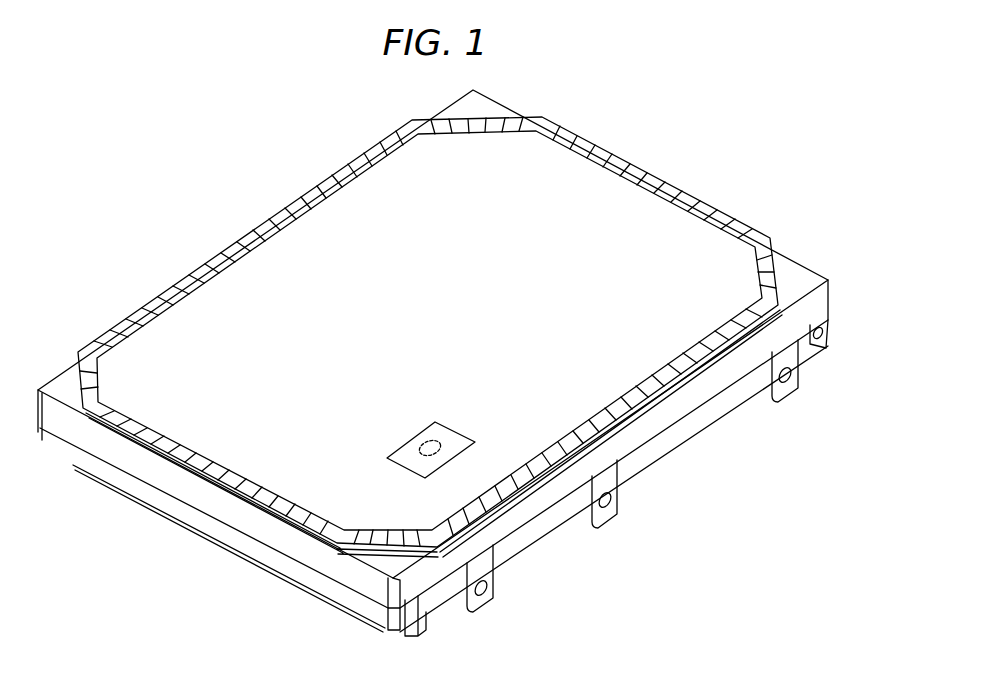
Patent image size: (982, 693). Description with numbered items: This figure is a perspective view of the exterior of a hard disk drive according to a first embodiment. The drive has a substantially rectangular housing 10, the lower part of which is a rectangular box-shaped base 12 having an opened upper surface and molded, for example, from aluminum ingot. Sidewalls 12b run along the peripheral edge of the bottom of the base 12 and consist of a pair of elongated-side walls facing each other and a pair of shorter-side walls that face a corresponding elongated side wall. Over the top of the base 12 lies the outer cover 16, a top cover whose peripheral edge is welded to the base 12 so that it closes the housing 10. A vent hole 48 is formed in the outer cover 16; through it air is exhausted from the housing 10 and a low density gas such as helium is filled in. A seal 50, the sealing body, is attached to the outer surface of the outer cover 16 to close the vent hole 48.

The housing 10 is at (259, 173).
The base 12 is at (661, 457).
The sidewalls 12b is at (540, 543).
The outer cover 16 is at (598, 192).
The vent hole 48 is at (422, 460).
The seal 50 is at (445, 432).